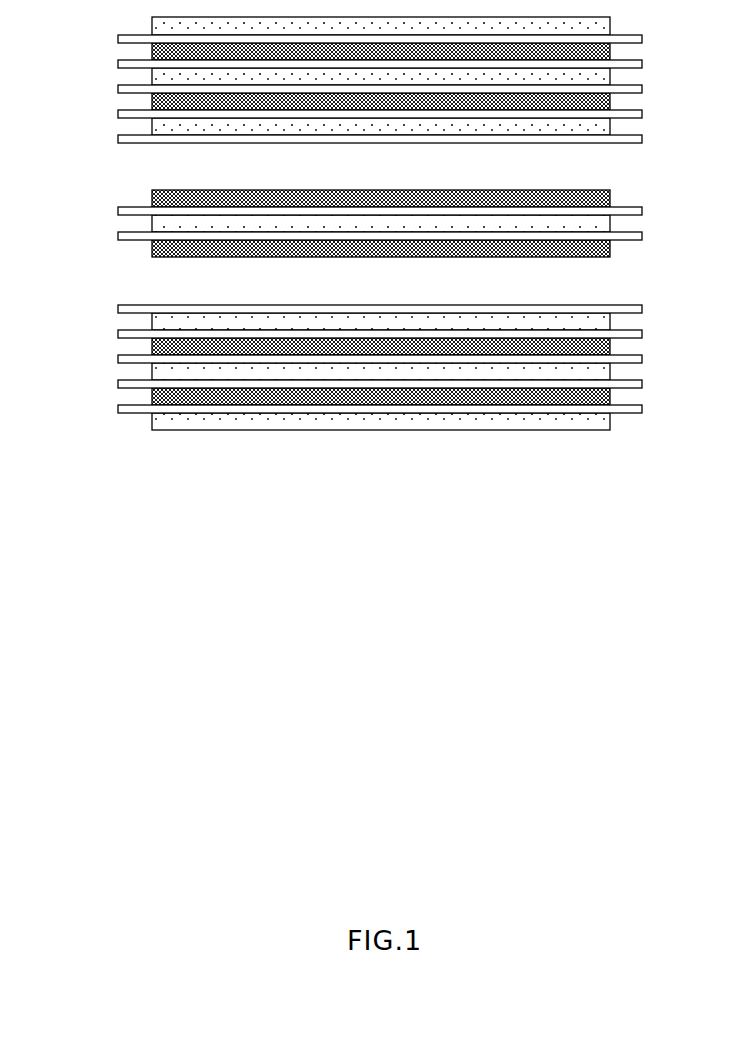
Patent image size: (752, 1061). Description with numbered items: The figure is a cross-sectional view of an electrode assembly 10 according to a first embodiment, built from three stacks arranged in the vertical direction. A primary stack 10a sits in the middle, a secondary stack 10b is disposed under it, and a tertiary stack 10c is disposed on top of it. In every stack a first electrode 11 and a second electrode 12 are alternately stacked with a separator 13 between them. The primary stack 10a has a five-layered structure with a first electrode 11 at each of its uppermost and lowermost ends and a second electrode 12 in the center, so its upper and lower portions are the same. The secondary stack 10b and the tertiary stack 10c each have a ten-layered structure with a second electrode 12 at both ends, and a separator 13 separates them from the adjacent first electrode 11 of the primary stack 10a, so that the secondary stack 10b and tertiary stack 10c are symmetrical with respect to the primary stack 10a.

The electrode assembly 10 is at (372, 250).
The primary stack 10a is at (650, 200).
The secondary stack 10b is at (409, 394).
The tertiary stack 10c is at (650, 20).
The first electrode 11 is at (315, 395).
The second electrode 12 is at (443, 421).
The separator 13 is at (380, 406).